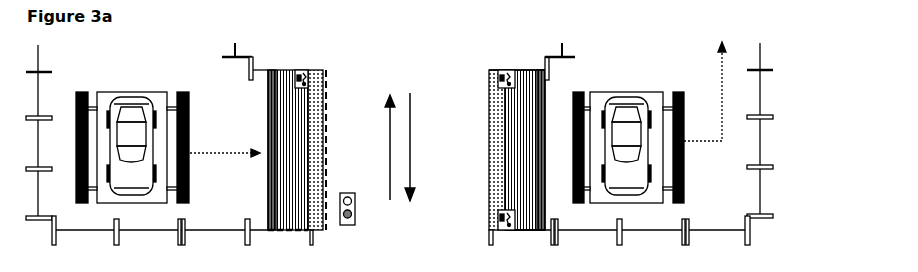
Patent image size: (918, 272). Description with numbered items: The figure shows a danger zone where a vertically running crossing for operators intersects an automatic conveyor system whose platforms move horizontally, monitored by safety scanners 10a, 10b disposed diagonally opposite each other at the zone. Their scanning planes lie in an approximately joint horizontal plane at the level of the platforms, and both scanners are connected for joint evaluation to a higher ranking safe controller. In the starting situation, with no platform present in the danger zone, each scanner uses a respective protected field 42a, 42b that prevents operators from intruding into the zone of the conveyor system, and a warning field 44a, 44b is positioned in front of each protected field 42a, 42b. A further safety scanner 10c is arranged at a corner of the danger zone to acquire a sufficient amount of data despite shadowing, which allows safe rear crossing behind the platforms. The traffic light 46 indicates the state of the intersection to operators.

The safety scanner 10a is at (302, 68).
The safety scanner 10b is at (509, 231).
The further safety scanner 10c is at (513, 70).
The protected field 42a is at (290, 213).
The protected field 42b is at (540, 219).
The warning field 44a is at (320, 84).
The warning field 44b is at (493, 85).
The traffic light 46 is at (353, 226).